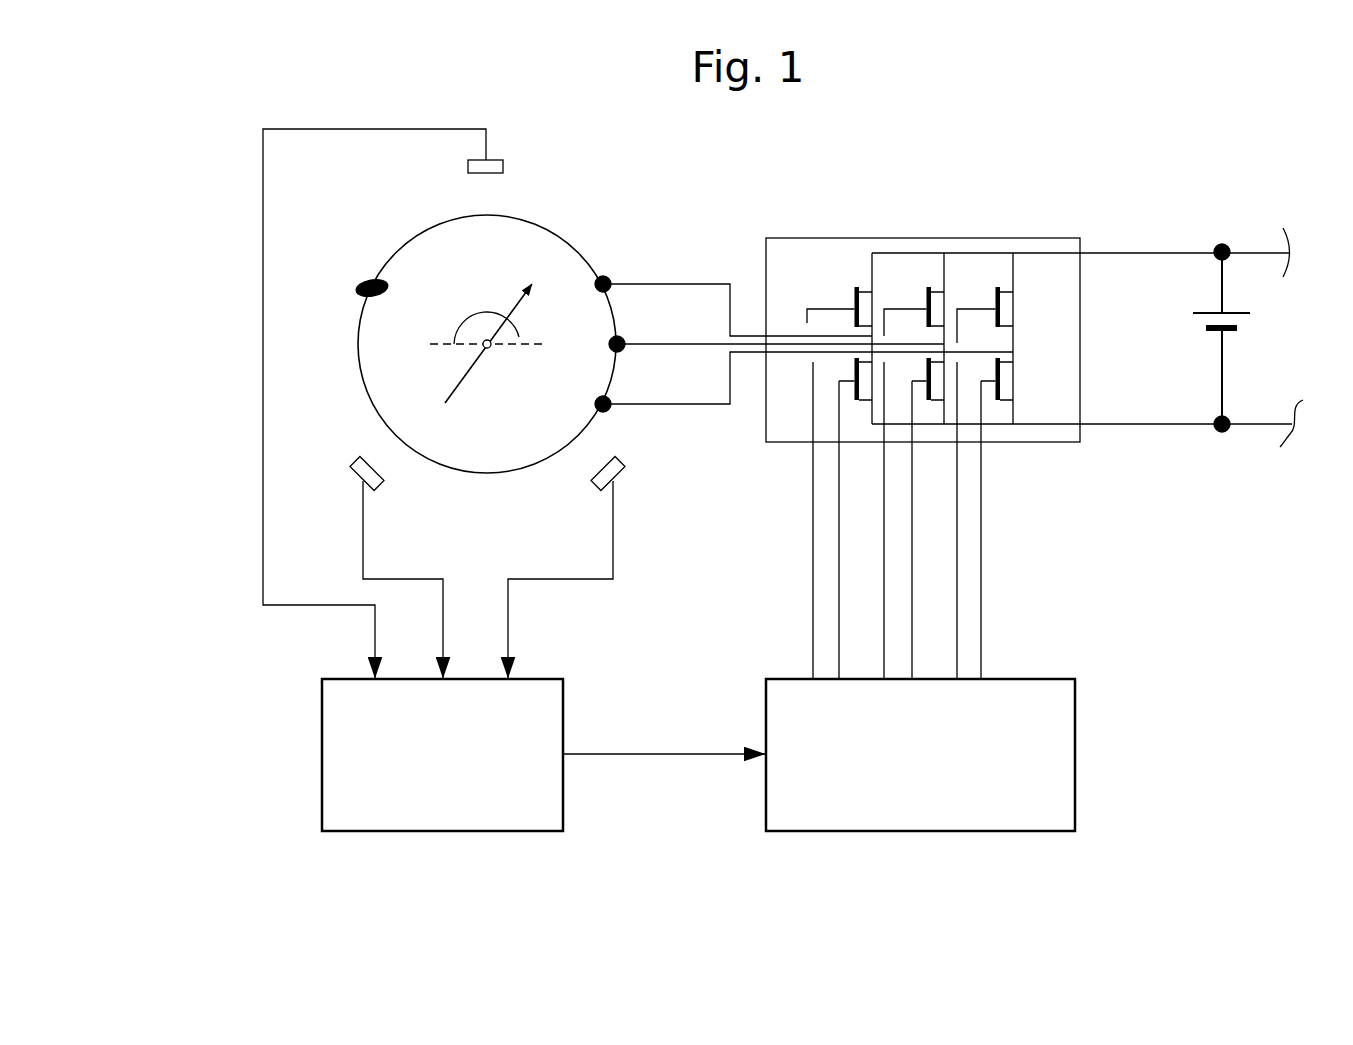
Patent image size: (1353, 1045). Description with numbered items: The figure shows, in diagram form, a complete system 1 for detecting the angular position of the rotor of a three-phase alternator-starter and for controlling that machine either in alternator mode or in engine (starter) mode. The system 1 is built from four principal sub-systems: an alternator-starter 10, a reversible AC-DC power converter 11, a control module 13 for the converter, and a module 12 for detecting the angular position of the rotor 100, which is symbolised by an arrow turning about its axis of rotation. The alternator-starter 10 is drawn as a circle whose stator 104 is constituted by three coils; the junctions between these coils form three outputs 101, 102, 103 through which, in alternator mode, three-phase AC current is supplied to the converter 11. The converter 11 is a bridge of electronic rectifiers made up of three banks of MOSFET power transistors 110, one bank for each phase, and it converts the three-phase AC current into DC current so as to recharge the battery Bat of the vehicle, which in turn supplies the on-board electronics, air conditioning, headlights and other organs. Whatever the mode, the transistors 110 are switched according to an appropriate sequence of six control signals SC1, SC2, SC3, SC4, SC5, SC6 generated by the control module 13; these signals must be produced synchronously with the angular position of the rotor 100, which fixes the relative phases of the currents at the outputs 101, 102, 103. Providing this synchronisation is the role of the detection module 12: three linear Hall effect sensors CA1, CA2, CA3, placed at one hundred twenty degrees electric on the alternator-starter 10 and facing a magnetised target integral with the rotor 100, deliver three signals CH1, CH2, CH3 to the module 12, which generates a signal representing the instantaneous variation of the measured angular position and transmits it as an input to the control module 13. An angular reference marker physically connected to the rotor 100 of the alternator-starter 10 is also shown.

The system 1 is at (661, 866).
The alternator-starter 10 is at (594, 250).
The rotor 100 is at (474, 381).
The output 101 is at (609, 281).
The output 102 is at (623, 341).
The output 103 is at (609, 401).
The stator 104 is at (364, 397).
The reversible AC-DC power converter 11 is at (872, 234).
The MOSFET power transistors 110 is at (962, 284).
The module for detecting the angular position of the rotor 12 is at (443, 836).
The control module 13 is at (921, 836).
The linear Hall effect sensor CA1 is at (515, 166).
The linear Hall effect sensor CA2 is at (389, 494).
The linear Hall effect sensor CA3 is at (585, 494).
The signal CH1 is at (263, 363).
The signal CH2 is at (363, 555).
The signal CH3 is at (563, 580).
The control signal SC1 is at (884, 503).
The control signal SC2 is at (839, 559).
The control signal SC3 is at (813, 613).
The control signal SC4 is at (912, 503).
The control signal SC5 is at (958, 559).
The control signal SC6 is at (981, 613).
The battery Bat is at (1254, 323).